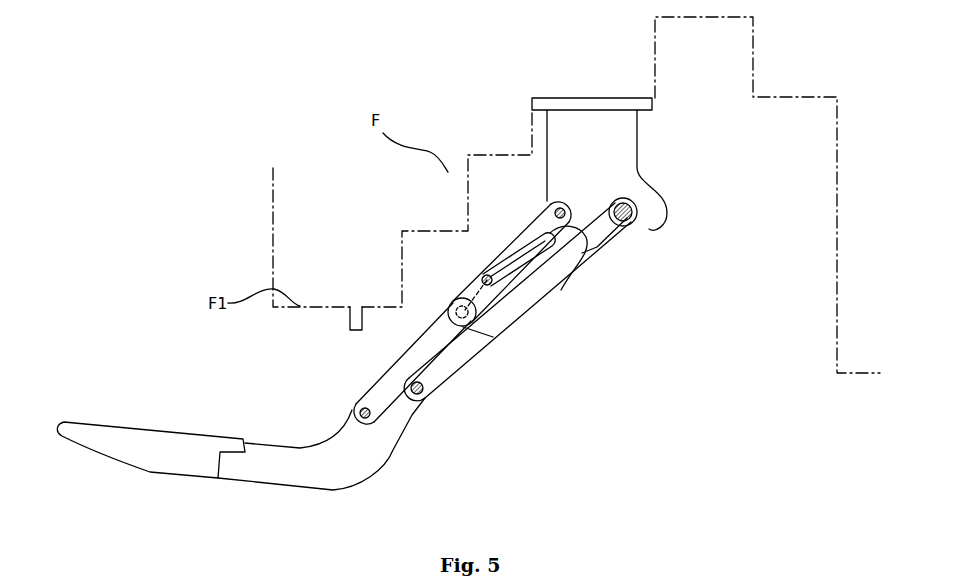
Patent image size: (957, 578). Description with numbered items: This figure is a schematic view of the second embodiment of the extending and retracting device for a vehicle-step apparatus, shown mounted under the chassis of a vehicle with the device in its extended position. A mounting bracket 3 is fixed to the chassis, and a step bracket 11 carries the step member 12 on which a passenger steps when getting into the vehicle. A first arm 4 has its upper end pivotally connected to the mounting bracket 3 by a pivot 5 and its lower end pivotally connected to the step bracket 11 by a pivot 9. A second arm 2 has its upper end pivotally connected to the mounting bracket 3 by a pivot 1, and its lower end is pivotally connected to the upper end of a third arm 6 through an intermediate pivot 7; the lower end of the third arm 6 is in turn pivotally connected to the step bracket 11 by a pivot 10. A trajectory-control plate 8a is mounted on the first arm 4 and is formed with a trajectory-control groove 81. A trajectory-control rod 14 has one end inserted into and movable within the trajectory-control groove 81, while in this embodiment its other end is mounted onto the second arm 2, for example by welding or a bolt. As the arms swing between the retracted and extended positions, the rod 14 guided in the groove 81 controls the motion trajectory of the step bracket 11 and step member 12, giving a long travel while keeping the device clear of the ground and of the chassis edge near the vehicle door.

The pivot 1 is at (568, 202).
The second arm 2 is at (553, 220).
The mounting bracket 3 is at (590, 120).
The first arm 4 is at (590, 255).
The pivot 5 is at (632, 217).
The third arm 6 is at (386, 386).
The intermediate pivot 7 is at (458, 307).
The trajectory-control plate 8a is at (513, 290).
The trajectory-control groove 81 is at (528, 257).
The pivot 9 is at (425, 395).
The pivot 10 is at (370, 417).
The step bracket 11 is at (308, 472).
The step member 12 is at (166, 467).
The trajectory-control rod 14 is at (482, 274).